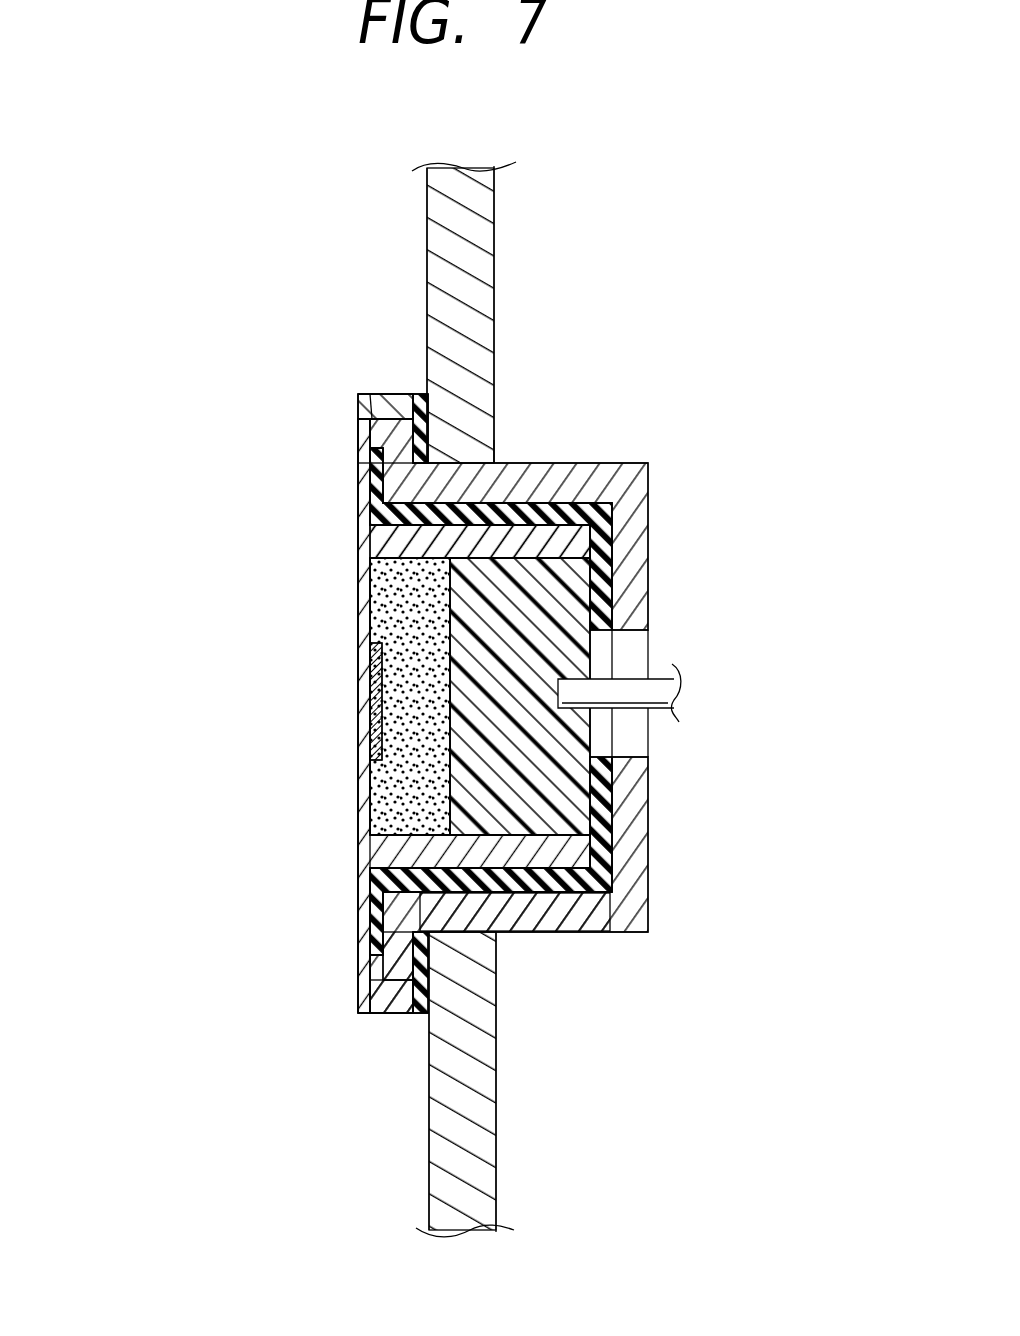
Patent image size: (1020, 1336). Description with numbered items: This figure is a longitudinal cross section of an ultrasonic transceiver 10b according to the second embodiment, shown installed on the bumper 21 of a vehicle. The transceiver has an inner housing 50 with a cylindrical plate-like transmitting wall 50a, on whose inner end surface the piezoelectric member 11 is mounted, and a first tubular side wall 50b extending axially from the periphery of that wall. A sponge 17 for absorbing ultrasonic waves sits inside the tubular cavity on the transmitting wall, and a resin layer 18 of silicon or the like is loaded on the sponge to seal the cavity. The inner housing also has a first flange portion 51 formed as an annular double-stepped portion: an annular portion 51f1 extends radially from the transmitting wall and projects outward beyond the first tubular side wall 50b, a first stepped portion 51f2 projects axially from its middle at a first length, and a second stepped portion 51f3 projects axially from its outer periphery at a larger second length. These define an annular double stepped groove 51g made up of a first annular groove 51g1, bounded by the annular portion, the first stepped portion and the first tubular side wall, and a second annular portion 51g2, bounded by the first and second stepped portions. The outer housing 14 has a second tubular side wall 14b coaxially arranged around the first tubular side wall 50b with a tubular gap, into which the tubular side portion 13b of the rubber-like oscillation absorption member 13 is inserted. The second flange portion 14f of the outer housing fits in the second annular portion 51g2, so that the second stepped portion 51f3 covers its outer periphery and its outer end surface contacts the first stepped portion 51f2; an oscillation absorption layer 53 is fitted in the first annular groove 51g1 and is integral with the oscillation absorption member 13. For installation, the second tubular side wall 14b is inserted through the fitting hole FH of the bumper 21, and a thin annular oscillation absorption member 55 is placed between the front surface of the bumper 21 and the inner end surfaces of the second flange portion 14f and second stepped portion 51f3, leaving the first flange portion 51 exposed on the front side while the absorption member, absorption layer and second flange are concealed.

The ultrasonic transceiver 10b is at (575, 210).
The bumper 21 is at (433, 208).
The oscillation absorption member 13 is at (602, 582).
The tubular side portion 13b is at (540, 897).
The outer housing 14 is at (640, 933).
The second tubular side wall 14b is at (575, 918).
The second flange portion 14f is at (393, 967).
The inner housing 50 is at (348, 800).
The transmitting wall 50a is at (363, 627).
The first tubular side wall 50b is at (560, 530).
The first flange portion 51 is at (336, 399).
The annular portion 51f1 is at (364, 937).
The first stepped portion 51f2 is at (290, 1063).
The second stepped portion 51f3 is at (378, 1123).
The annular double stepped groove 51g is at (143, 397).
The first annular groove 51g1 is at (243, 1015).
The second annular portion 51g2 is at (358, 449).
The oscillation absorption layer 53 is at (377, 913).
The annular oscillation absorption member 55 is at (372, 392).
The resin layer 18 is at (603, 508).
The sponge 17 is at (380, 588).
The piezoelectric member 11 is at (368, 712).
The fitting hole FH is at (509, 449).